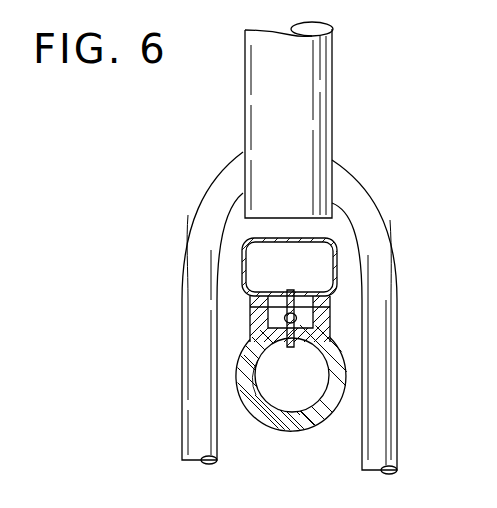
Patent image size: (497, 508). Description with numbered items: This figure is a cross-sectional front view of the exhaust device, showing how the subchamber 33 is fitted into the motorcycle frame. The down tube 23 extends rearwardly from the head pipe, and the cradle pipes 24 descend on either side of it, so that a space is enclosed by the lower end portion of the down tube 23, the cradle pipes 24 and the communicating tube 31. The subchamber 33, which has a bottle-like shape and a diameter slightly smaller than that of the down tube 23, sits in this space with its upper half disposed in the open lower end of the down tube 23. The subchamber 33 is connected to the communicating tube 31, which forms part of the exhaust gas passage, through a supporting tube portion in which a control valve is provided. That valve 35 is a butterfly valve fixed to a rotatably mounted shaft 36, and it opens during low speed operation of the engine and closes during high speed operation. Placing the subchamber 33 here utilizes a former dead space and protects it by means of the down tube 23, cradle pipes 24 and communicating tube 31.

The down tube 23 is at (332, 123).
The cradle pipes 24 is at (187, 330).
The communicating tube 31 is at (280, 430).
The subchamber 33 is at (327, 278).
The valve 35 is at (293, 347).
The shaft 36 is at (283, 317).